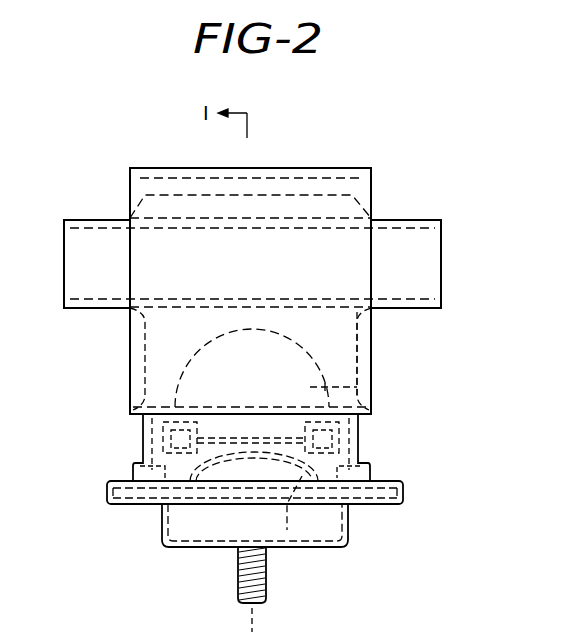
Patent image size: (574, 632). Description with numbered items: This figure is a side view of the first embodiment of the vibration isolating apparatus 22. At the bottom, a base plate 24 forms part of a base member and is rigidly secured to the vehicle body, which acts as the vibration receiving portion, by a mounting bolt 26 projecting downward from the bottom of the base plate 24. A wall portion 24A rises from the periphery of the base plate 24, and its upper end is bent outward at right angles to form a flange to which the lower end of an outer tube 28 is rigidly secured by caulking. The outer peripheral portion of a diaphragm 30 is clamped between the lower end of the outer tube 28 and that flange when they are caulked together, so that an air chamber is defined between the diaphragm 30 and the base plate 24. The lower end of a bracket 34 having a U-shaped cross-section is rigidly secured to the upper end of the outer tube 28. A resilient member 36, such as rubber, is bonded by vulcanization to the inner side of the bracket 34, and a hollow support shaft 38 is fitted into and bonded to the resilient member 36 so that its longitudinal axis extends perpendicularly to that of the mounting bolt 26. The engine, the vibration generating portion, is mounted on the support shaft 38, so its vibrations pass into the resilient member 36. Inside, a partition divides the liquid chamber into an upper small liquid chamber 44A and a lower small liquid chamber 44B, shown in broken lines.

The vibration isolating apparatus 22 is at (396, 173).
The support shaft 38 is at (430, 220).
The resilient member 36 is at (357, 323).
The bracket 34 is at (371, 352).
The upper small liquid chamber 44A is at (371, 389).
The outer tube 28 is at (358, 428).
The lower small liquid chamber 44B is at (355, 445).
The wall portion 24A is at (162, 520).
The base plate 24 is at (188, 542).
The diaphragm 30 is at (254, 495).
The mounting bolt 26 is at (238, 585).